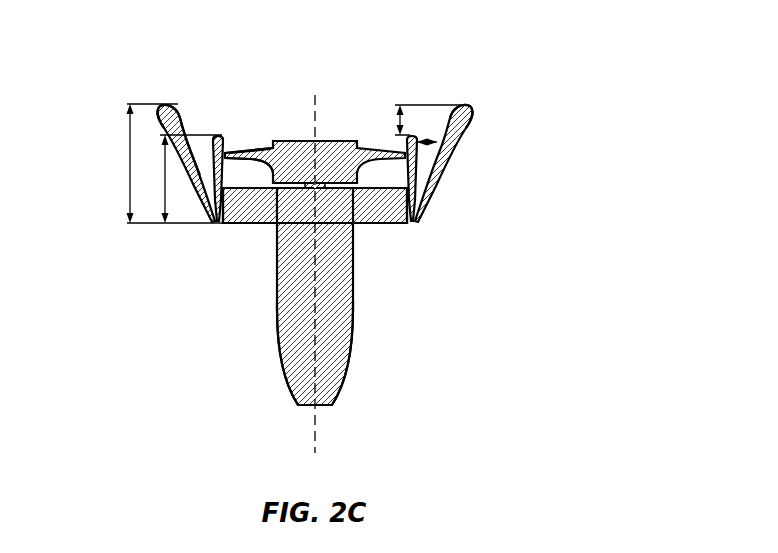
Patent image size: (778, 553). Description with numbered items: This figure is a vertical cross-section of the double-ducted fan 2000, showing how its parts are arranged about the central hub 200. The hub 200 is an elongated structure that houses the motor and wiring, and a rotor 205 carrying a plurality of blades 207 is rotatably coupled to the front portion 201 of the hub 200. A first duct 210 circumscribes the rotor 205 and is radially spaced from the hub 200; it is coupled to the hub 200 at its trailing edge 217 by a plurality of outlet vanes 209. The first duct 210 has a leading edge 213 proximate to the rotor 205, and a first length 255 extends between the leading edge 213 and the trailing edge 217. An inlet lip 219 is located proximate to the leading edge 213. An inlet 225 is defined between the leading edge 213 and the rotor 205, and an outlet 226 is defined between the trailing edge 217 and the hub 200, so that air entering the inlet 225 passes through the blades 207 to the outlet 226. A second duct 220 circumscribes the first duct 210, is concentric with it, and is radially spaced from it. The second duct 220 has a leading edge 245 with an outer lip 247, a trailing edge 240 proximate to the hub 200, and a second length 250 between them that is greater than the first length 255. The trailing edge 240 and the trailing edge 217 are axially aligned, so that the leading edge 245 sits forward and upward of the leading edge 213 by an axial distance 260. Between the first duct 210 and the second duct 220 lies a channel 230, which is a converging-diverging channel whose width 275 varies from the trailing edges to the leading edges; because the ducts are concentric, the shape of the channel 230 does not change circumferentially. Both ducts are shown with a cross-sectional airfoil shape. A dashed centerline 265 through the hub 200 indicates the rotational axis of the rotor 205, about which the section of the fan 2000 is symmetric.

The hub 200 is at (338, 297).
The front portion 201 is at (300, 200).
The rotor 205 is at (335, 152).
The blades 207 is at (265, 150).
The outlet vanes 209 is at (372, 212).
The first duct 210 is at (415, 158).
The leading edge 213 is at (198, 120).
The trailing edge 217 is at (220, 225).
The inlet lip 219 is at (213, 134).
The second duct 220 is at (448, 148).
The inlet 225 is at (251, 130).
The outlet 226 is at (249, 228).
The channel 230 is at (429, 188).
The trailing edge 240 is at (203, 213).
The leading edge 245 is at (166, 106).
The outer lip 247 is at (467, 116).
The second length 250 is at (130, 153).
The first length 255 is at (165, 182).
The axial distance 260 is at (399, 120).
The central axis 265 is at (316, 430).
The width 275 is at (428, 140).
The double-ducted fan 2000 is at (226, 367).